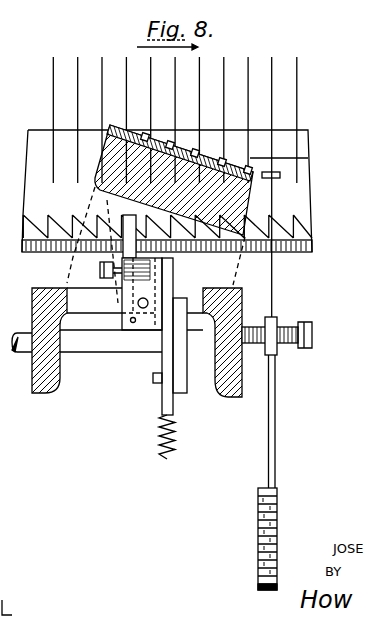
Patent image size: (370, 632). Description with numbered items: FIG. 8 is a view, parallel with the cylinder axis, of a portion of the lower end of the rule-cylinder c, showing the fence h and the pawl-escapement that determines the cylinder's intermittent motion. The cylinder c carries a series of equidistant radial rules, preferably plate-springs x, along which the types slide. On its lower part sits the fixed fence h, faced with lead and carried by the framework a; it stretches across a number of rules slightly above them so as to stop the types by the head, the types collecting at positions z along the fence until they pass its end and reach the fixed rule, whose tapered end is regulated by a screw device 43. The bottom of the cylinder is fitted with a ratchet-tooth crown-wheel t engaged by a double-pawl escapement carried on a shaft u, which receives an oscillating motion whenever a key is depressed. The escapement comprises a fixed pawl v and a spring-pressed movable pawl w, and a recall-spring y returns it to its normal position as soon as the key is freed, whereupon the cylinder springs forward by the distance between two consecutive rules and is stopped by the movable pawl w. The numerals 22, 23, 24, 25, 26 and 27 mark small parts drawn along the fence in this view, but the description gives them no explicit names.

The cam pin 22 is at (150, 135).
The cam pin 23 is at (174, 142).
The cam pin 24 is at (198, 152).
The cam pin 25 is at (226, 158).
The cam pin 26 is at (251, 165).
The stop block 27 is at (275, 172).
The screw device 43 is at (297, 352).
The framework a is at (181, 340).
The rule-cylinder c is at (303, 145).
The fence h is at (183, 180).
The ratchet-tooth crown-wheel t is at (28, 218).
The shaft u is at (120, 348).
The fixed pawl v is at (131, 292).
The movable pawl w is at (118, 208).
The plate-spring rule x is at (286, 292).
The recall-spring y is at (178, 442).
The type position z is at (277, 527).